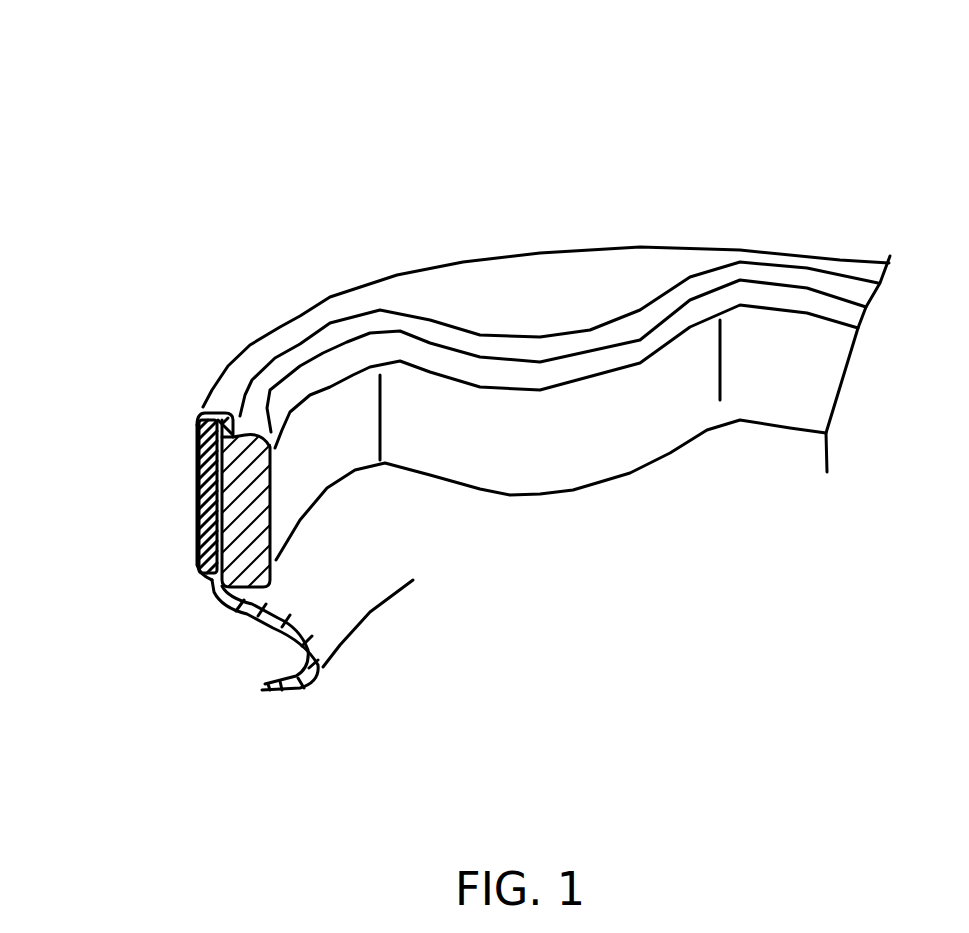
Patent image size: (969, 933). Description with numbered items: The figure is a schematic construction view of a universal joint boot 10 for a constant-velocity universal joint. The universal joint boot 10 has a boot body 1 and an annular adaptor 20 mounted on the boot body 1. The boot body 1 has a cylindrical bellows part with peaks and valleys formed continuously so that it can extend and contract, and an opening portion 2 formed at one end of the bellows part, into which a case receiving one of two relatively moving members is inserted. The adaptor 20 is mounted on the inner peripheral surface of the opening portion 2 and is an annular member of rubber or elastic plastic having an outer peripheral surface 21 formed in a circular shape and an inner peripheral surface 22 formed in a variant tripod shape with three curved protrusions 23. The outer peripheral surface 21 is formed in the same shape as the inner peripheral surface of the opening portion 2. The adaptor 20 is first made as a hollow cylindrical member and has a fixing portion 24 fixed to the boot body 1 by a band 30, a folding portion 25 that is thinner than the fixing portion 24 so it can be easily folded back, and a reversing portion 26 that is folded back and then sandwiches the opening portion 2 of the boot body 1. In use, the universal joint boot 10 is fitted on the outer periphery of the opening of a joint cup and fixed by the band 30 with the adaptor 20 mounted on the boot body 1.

The universal joint boot 10 is at (460, 205).
The annular adaptor 20 is at (578, 248).
The outer peripheral surface 21 is at (772, 250).
The inner peripheral surface 22 is at (768, 363).
The curved protrusion 23 is at (578, 460).
The folding portion 25 is at (247, 355).
The opening portion 2 is at (195, 420).
The reversing portion 26 is at (193, 452).
The band 30 is at (197, 508).
The fixing portion 24 is at (207, 577).
The boot body 1 is at (247, 630).